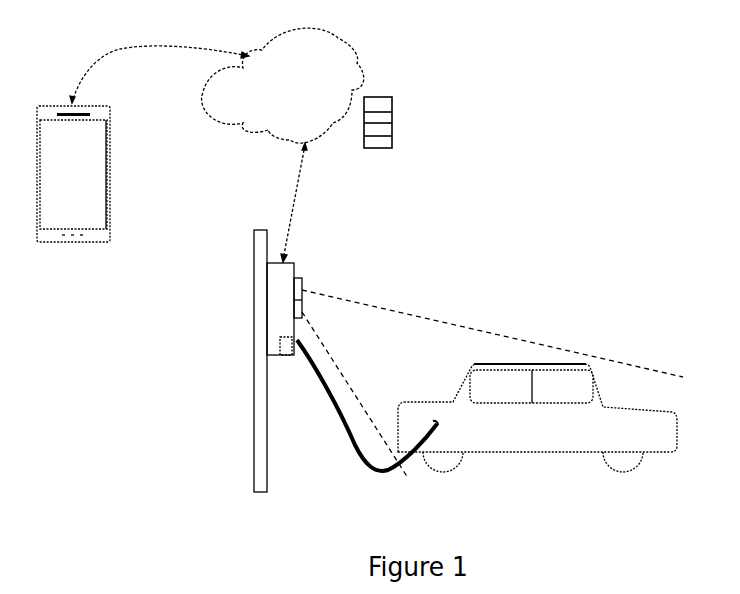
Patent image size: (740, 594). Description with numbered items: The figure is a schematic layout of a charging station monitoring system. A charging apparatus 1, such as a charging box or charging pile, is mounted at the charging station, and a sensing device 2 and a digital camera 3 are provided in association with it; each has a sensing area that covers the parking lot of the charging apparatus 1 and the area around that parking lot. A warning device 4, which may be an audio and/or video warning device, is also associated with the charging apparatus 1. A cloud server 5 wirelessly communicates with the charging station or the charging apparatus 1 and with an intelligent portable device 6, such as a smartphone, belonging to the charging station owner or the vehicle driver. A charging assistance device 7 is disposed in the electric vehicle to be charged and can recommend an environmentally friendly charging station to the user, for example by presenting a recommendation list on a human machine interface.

The charging apparatus 1 is at (257, 288).
The sensing device 2 is at (299, 304).
The digital camera 3 is at (302, 282).
The warning device 4 is at (288, 357).
The cloud server 5 is at (283, 85).
The intelligent portable device 6 is at (73, 174).
The charging assistance device 7 is at (537, 418).